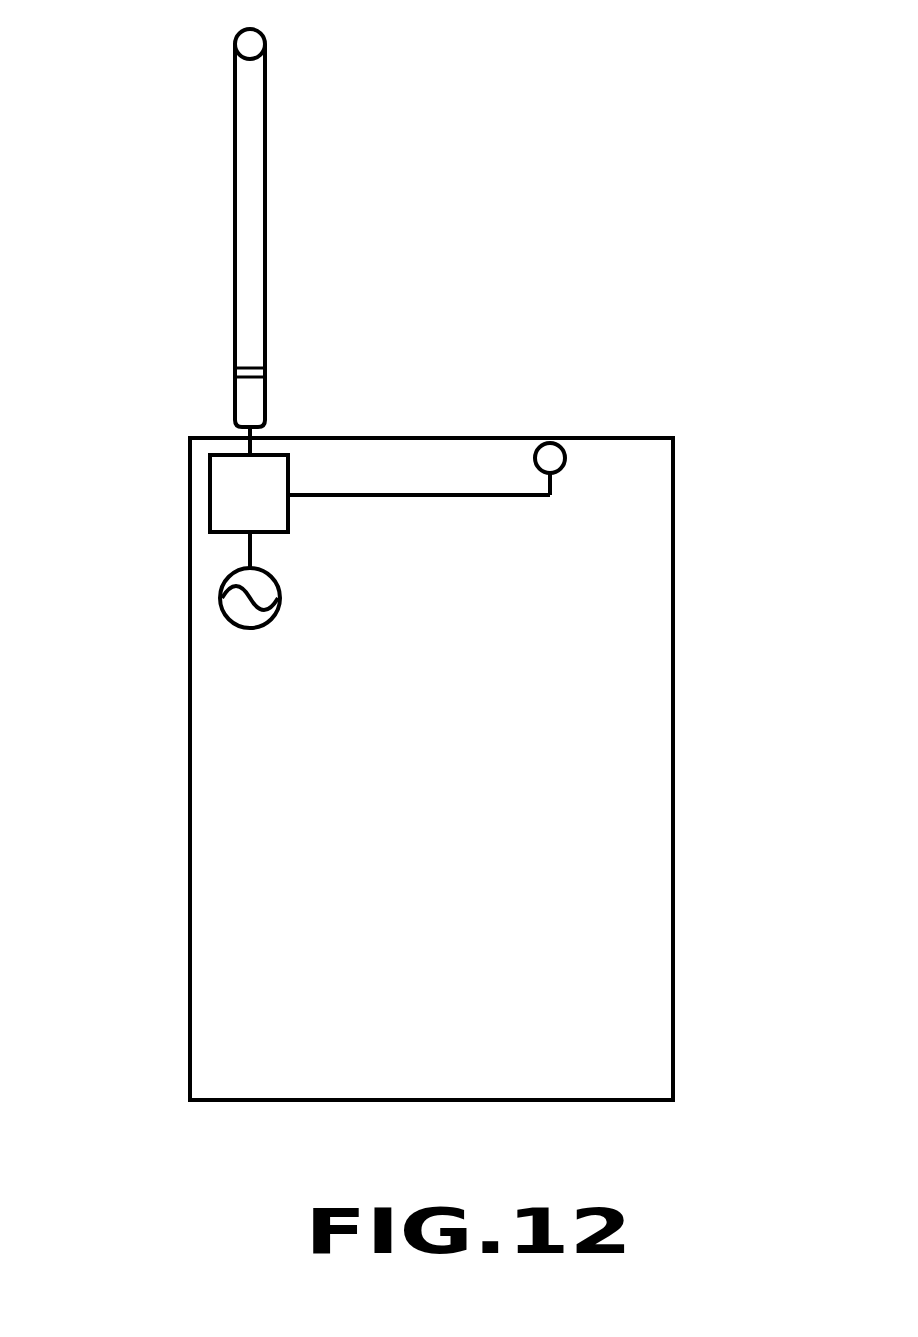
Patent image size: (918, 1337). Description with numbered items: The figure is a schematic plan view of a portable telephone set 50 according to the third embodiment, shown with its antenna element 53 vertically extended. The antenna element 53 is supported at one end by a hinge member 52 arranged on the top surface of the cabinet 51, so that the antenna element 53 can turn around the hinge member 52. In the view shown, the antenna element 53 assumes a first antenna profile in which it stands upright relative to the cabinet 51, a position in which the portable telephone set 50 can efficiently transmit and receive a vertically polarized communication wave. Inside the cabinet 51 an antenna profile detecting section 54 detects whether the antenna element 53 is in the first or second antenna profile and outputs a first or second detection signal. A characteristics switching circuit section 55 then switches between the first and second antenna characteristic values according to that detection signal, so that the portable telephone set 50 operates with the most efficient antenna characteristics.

The portable telephone set 50 is at (512, 38).
The cabinet 51 is at (648, 722).
The hinge member 52 is at (248, 398).
The antenna element 53 is at (250, 205).
The antenna profile detecting section 54 is at (550, 451).
The characteristics switching circuit section 55 is at (210, 490).